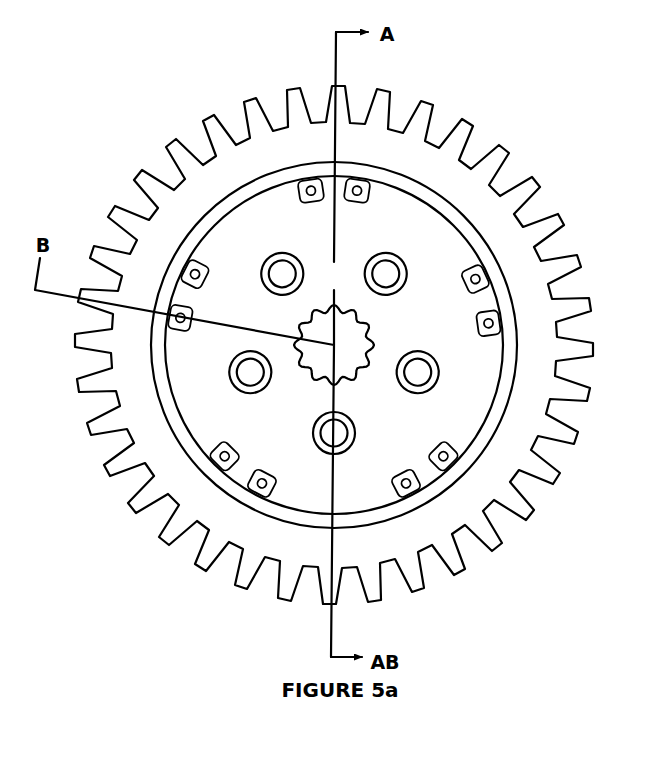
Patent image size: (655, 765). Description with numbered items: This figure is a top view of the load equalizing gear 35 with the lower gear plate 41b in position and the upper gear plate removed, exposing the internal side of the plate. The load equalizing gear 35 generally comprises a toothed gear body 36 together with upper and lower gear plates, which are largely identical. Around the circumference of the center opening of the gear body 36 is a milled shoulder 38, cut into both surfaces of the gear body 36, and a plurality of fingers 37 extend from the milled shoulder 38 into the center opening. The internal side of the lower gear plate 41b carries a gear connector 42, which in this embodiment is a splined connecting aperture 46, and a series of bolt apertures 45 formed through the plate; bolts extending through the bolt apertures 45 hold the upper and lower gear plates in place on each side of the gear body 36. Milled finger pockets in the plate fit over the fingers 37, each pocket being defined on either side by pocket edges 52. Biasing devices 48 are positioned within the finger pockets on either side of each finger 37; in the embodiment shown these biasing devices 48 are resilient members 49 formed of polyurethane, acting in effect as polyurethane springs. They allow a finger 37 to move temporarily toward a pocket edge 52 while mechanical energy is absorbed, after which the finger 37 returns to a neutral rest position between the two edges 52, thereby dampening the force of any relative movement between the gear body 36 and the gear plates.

The load equalizing gear 35 is at (465, 78).
The gear body 36 is at (550, 396).
The fingers 37 is at (492, 297).
The milled shoulder 38 is at (165, 375).
The lower gear plate 41b is at (334, 345).
The gear connector 42 is at (353, 378).
The bolt apertures 45 is at (366, 260).
The splined connecting aperture 46 is at (330, 331).
The biasing devices 48 is at (212, 260).
The resilient members 49 is at (196, 268).
The pocket edges 52 is at (472, 262).